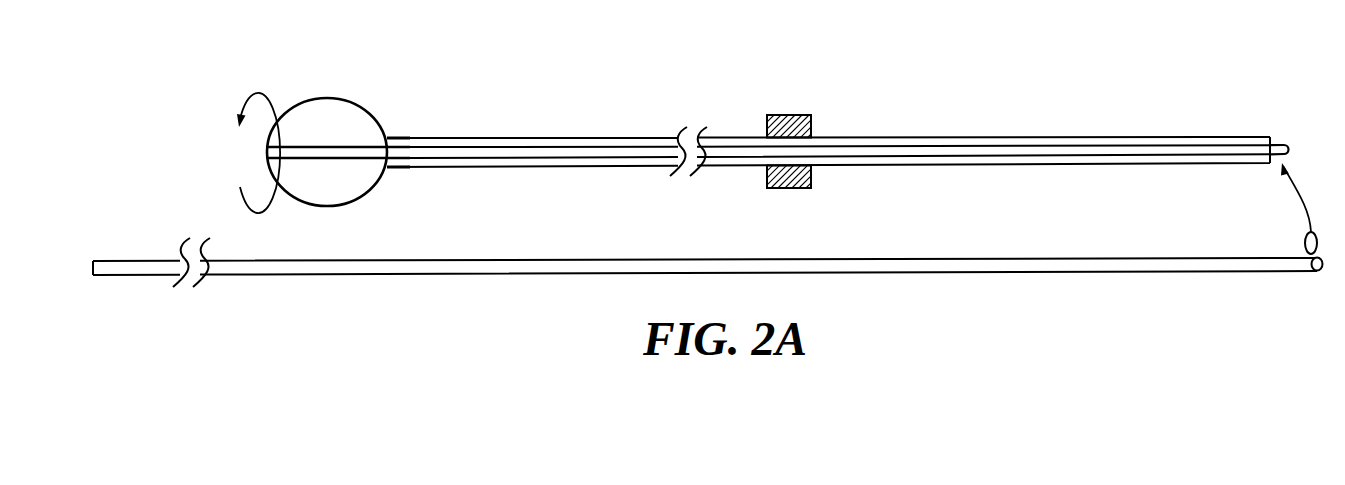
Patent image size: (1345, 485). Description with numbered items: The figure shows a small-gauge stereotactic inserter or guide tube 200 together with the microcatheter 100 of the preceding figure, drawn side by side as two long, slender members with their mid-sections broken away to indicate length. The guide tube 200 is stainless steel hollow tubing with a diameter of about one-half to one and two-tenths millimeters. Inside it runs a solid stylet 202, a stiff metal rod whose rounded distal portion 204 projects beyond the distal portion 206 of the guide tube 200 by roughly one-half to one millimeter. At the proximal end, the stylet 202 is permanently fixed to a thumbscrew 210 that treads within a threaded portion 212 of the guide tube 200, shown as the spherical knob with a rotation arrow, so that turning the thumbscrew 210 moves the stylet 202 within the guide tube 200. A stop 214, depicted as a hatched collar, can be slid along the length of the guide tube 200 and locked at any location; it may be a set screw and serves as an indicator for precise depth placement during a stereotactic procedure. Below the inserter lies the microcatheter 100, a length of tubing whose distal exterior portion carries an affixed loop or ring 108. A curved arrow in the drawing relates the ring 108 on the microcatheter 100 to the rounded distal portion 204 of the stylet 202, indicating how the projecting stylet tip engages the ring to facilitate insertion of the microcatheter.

The microcatheter 100 is at (1086, 280).
The loop or ring 108 is at (1304, 240).
The stereotactic inserter or guide tube 200 is at (886, 137).
The solid stylet 202 is at (995, 150).
The rounded distal portion 204 is at (1286, 143).
The distal portion of the guide tube 206 is at (1211, 130).
The thumbscrew 210 is at (338, 150).
The threaded portion 212 is at (329, 97).
The stop 214 is at (791, 115).